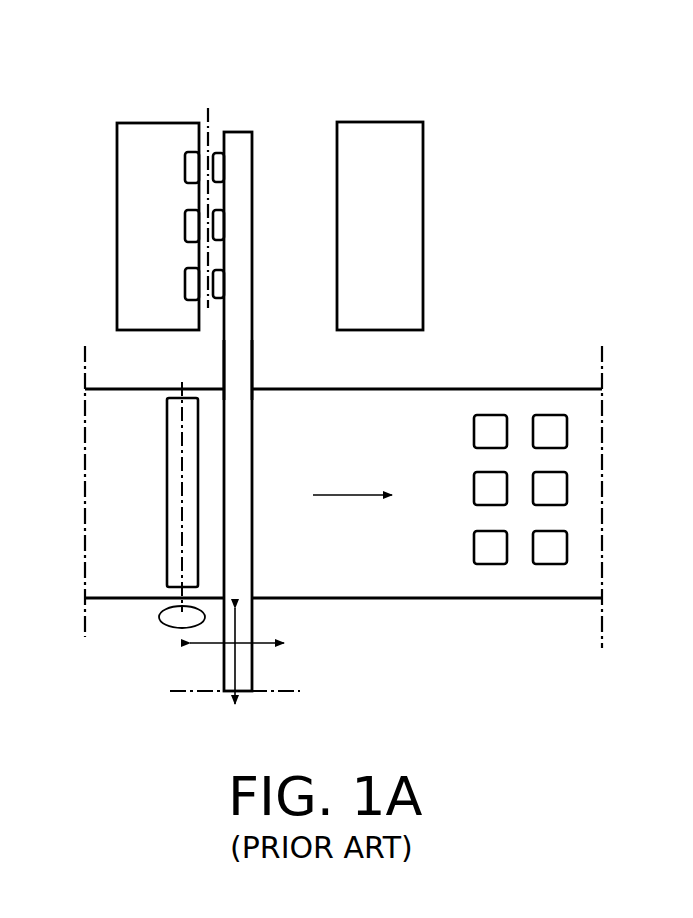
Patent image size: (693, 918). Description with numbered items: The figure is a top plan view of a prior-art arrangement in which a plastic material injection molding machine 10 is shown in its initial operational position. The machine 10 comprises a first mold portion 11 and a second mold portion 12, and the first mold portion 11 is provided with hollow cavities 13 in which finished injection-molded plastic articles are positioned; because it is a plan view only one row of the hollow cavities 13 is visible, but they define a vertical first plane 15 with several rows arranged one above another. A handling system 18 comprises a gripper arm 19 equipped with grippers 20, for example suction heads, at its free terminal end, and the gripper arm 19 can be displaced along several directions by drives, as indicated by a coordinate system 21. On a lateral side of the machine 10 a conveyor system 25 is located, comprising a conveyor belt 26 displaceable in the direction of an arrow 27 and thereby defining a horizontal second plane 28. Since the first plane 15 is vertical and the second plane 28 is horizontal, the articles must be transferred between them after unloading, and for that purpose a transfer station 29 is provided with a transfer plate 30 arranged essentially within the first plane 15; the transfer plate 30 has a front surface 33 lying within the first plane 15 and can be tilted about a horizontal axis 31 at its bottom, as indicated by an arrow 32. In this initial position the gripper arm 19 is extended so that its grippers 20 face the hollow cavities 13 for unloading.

The plastic material injection molding machine 10 is at (324, 108).
The first mold portion 11 is at (145, 142).
The second mold portion 12 is at (392, 143).
The hollow cavities 13 is at (180, 172).
The first plane 15 is at (211, 120).
The handling system 18 is at (250, 124).
The gripper arm 19 is at (238, 364).
The grippers 20 is at (222, 166).
The coordinate system 21 is at (238, 657).
The conveyor system 25 is at (489, 380).
The conveyor belt 26 is at (432, 575).
The arrow 27 is at (351, 492).
The second plane 28 is at (413, 424).
The transfer station 29 is at (141, 380).
The transfer plate 30 is at (166, 509).
The horizontal axis 31 is at (182, 466).
The arrow 32 is at (162, 618).
The front surface 33 is at (208, 520).